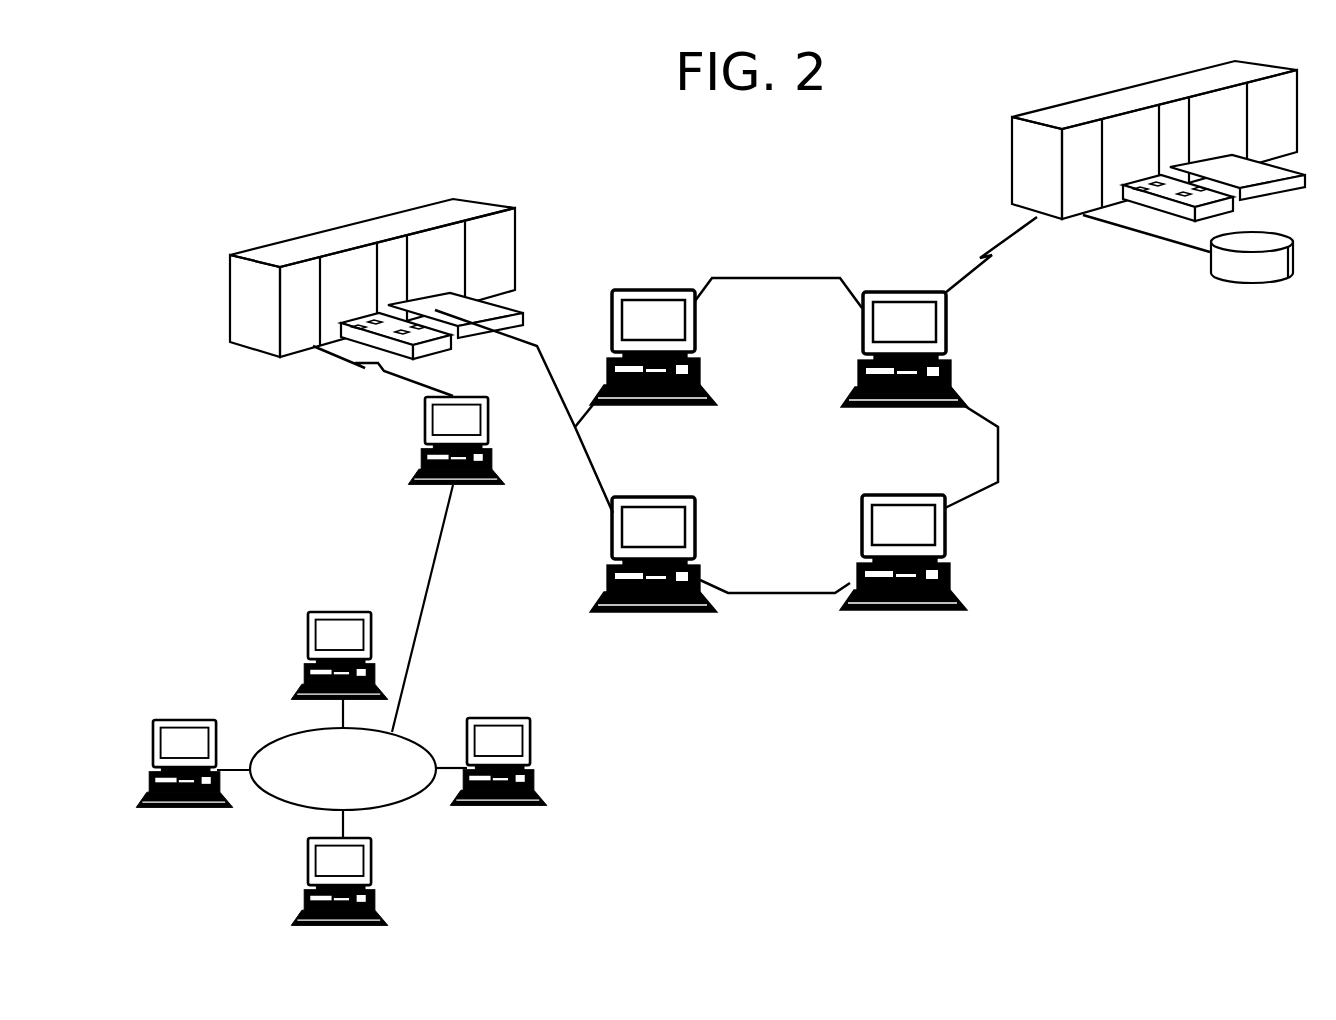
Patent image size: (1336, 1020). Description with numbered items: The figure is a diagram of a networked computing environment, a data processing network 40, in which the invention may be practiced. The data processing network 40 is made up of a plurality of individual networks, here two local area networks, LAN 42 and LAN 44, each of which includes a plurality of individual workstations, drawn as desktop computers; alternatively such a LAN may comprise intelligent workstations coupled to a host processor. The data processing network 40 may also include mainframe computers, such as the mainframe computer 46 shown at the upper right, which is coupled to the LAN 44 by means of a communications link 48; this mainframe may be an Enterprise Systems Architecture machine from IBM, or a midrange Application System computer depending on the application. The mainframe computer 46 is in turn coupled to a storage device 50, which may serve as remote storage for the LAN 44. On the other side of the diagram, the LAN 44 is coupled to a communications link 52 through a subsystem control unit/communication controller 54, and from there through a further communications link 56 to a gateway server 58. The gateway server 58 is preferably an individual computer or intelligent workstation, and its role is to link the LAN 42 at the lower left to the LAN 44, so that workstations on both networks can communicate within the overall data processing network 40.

The data processing network 40 is at (786, 254).
The LAN 42 is at (342, 781).
The LAN 44 is at (849, 498).
The mainframe computer 46 is at (1073, 97).
The communications link 48 is at (1002, 232).
The storage device 50 is at (1297, 247).
The communications link 52 is at (548, 362).
The subsystem control unit/communication controller 54 is at (377, 215).
The communications link 56 is at (348, 366).
The gateway server 58 is at (490, 410).